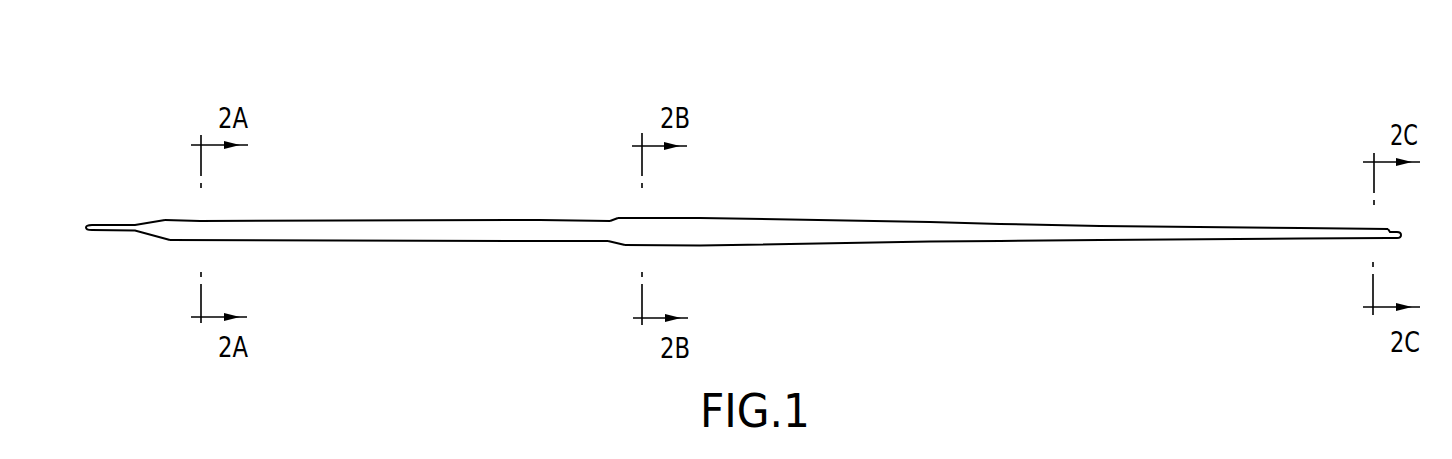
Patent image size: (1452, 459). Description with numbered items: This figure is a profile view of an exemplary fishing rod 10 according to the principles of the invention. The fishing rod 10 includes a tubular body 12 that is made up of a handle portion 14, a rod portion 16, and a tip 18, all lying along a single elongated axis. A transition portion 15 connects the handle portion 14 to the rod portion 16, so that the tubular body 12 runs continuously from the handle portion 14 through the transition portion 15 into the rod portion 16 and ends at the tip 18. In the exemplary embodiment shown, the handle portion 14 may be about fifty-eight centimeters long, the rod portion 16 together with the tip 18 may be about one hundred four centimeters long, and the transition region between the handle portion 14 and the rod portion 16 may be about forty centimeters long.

The fishing rod 10 is at (931, 129).
The tubular body 12 is at (813, 221).
The handle portion 14 is at (361, 220).
The transition portion 15 is at (611, 218).
The rod portion 16 is at (1121, 226).
The tip 18 is at (1387, 229).